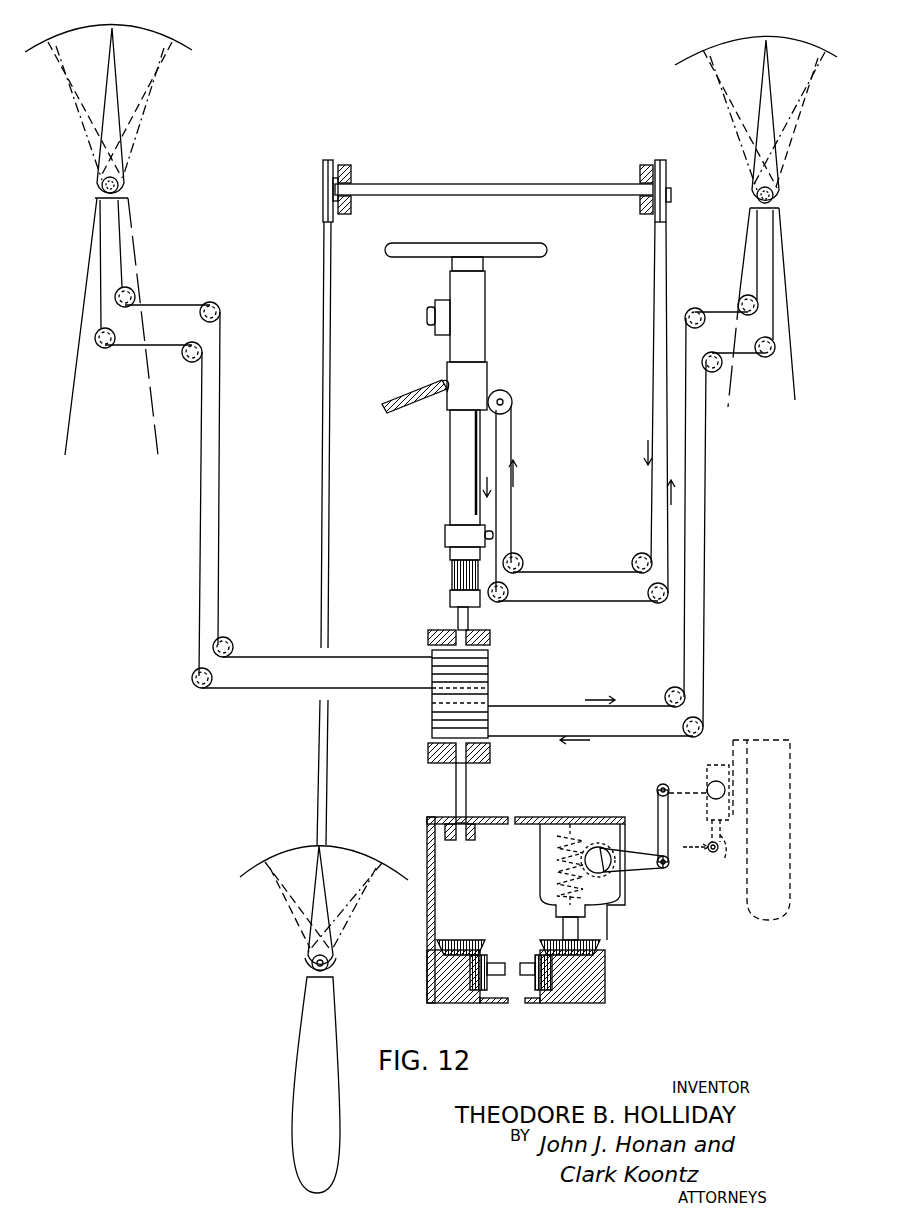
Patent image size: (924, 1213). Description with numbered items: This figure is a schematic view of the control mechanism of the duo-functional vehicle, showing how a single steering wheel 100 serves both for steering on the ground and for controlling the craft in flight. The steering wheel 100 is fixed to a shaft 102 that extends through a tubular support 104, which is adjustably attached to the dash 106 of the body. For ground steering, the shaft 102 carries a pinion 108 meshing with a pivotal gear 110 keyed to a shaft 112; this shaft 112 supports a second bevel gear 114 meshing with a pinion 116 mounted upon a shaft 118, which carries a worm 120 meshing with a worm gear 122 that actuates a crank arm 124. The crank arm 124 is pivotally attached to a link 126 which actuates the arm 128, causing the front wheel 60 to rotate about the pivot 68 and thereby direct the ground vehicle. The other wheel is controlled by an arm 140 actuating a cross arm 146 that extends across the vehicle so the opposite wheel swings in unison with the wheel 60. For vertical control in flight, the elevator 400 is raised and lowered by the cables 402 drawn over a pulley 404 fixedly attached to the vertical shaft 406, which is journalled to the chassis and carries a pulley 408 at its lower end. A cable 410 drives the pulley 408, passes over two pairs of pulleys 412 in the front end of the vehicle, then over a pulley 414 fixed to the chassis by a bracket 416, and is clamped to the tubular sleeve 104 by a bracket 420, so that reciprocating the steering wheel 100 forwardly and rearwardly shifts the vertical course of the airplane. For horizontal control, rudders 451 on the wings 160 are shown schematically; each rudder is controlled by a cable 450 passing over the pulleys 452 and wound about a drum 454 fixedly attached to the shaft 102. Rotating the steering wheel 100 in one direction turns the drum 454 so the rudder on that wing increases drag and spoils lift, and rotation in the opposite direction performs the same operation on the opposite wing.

The rudder 451 is at (150, 108).
The cable 450 is at (96, 271).
The wing 160 is at (100, 311).
The pulley 452 is at (133, 296).
The pulley 404 is at (327, 160).
The vertical shaft 406 is at (433, 177).
The pulley 408 is at (661, 163).
The cable 402 is at (330, 777).
The cable 410 is at (655, 343).
The steering wheel 100 is at (543, 245).
The tubular support 104 is at (485, 305).
The dash 106 is at (392, 404).
The bracket 416 is at (488, 372).
The pulley 414 is at (513, 402).
The bracket 420 is at (445, 536).
The pulley 412 is at (521, 560).
The drum 454 is at (490, 653).
The shaft 102 is at (468, 780).
The elevator 400 is at (322, 868).
The pinion 108 is at (472, 945).
The pivotal gear 110 is at (480, 992).
The shaft 112 is at (505, 968).
The second bevel gear 114 is at (545, 992).
The pinion 116 is at (598, 948).
The shaft 118 is at (578, 928).
The worm 120 is at (557, 875).
The worm gear 122 is at (598, 845).
The crank arm 124 is at (640, 870).
The link 126 is at (662, 808).
The arm 128 is at (695, 781).
The pivot 68 is at (716, 781).
The cross arm 146 is at (700, 848).
The arm 140 is at (724, 852).
The front wheel 60 is at (790, 795).